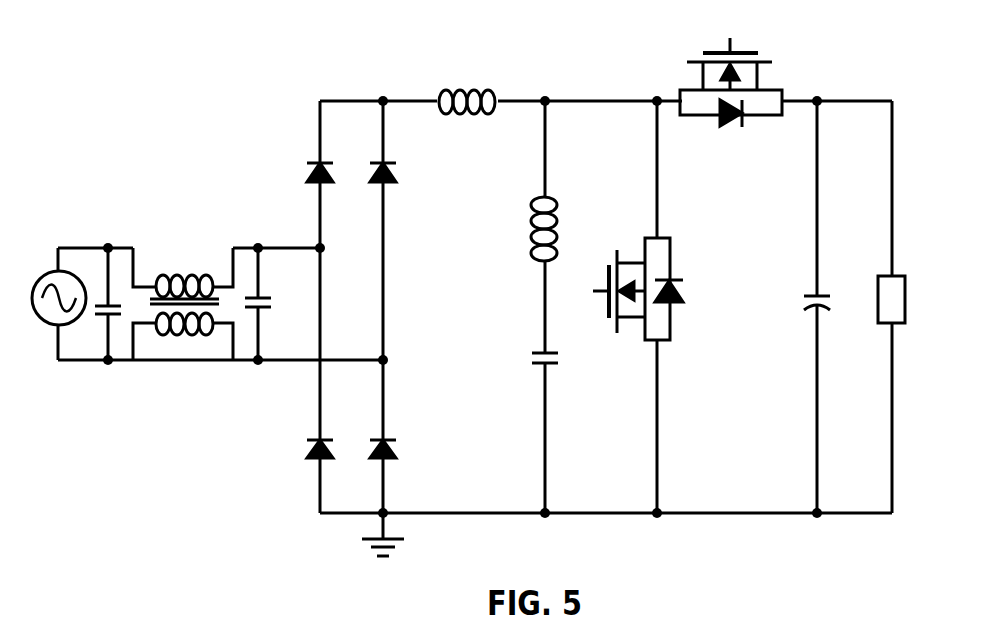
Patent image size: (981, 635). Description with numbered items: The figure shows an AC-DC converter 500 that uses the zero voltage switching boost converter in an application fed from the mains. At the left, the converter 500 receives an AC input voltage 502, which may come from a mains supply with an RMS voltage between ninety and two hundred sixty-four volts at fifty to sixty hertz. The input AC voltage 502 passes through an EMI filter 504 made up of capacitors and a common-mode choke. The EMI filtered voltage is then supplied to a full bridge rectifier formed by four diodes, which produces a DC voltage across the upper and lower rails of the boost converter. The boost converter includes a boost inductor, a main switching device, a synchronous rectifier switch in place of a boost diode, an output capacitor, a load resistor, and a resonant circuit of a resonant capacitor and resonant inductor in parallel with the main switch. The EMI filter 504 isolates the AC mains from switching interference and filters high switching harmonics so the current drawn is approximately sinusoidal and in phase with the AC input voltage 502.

The AC-DC converter 500 is at (188, 155).
The AC input voltage 502 is at (43, 322).
The EMI filter 504 is at (159, 340).